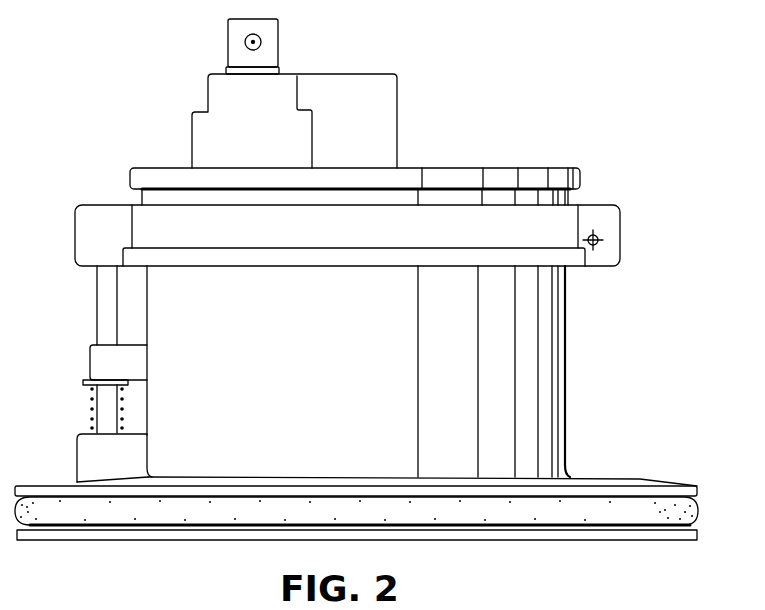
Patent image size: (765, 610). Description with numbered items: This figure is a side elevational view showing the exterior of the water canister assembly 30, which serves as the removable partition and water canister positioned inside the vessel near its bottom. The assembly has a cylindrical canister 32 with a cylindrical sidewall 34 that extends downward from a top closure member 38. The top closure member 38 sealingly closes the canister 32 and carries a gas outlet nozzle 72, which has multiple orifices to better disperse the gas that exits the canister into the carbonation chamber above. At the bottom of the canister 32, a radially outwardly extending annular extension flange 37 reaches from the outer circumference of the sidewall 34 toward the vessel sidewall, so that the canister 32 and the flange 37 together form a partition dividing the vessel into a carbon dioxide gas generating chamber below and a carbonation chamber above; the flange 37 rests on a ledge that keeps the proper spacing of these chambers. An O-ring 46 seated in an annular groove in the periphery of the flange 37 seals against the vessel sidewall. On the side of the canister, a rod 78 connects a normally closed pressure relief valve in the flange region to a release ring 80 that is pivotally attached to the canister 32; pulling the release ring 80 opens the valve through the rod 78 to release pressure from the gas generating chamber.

The water canister assembly 30 is at (434, 118).
The cylindrical canister 32 is at (567, 338).
The cylindrical sidewall 34 is at (567, 403).
The annular extension flange 37 is at (640, 480).
The top closure member 38 is at (500, 168).
The O-ring 46 is at (578, 517).
The gas outlet nozzle 72 is at (278, 42).
The rod 78 is at (102, 317).
The release ring 80 is at (100, 205).